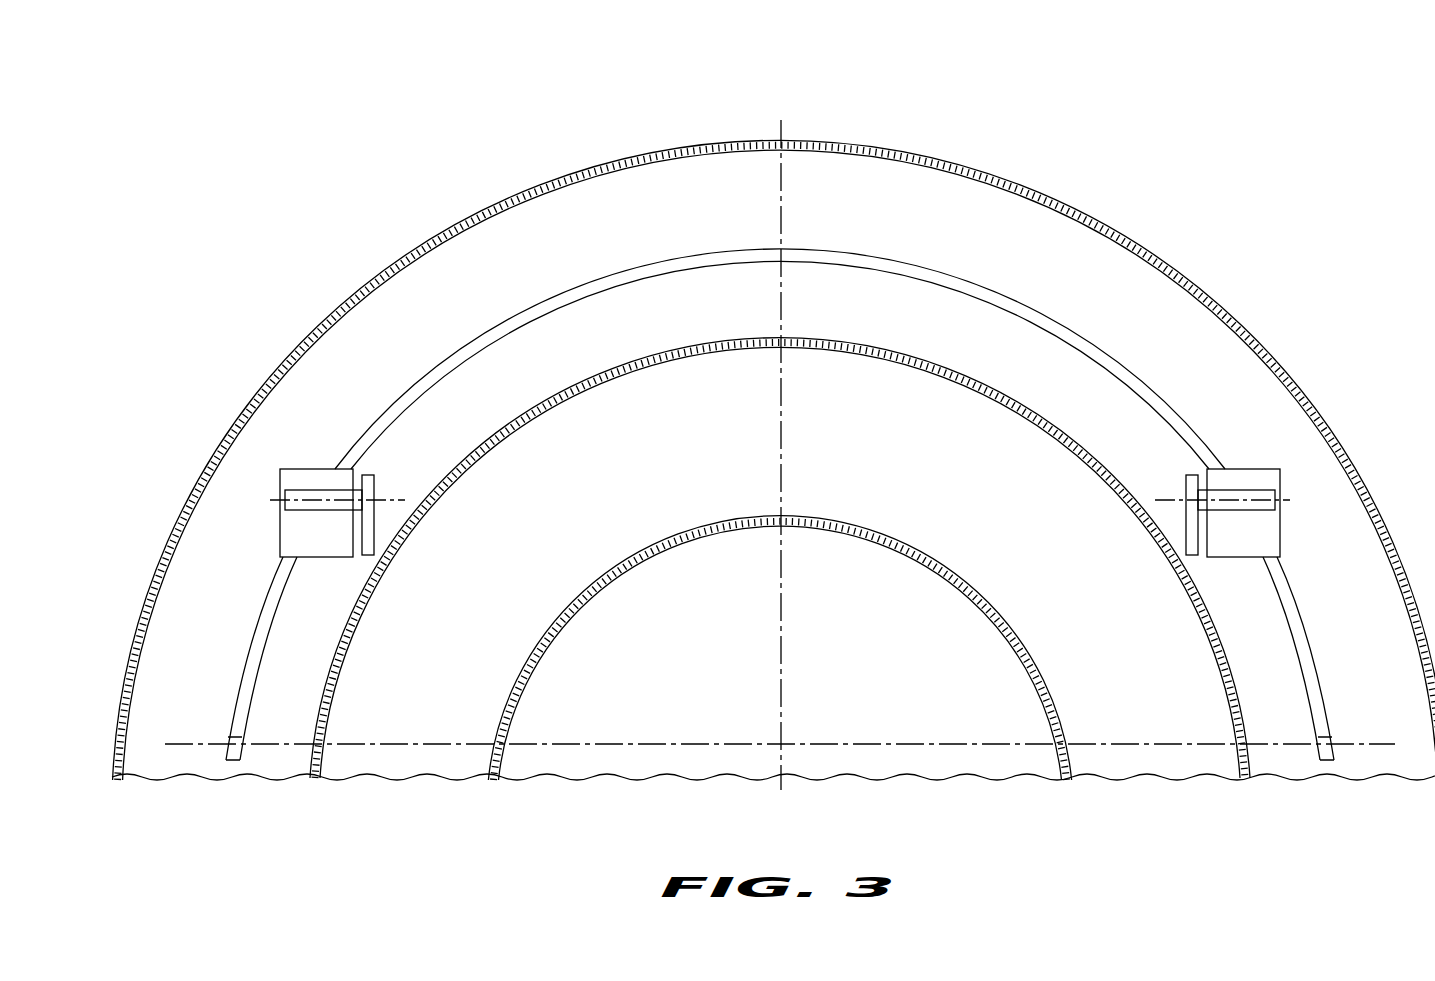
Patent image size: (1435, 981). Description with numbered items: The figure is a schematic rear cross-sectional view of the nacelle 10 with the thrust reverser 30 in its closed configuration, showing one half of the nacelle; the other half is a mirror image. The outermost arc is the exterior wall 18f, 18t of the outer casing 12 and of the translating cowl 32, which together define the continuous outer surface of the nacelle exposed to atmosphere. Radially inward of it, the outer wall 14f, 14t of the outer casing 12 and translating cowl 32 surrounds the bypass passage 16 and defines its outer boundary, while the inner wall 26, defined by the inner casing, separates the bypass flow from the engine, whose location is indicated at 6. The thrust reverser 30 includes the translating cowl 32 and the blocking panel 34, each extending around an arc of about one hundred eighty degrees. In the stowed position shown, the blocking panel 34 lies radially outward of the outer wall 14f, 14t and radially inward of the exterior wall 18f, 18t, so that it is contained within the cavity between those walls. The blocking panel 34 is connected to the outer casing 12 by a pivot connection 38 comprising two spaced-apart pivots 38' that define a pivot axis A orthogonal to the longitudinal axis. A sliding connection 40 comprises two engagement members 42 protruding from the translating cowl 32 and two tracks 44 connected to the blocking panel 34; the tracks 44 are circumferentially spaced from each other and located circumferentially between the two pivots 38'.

The nacelle 10 is at (284, 196).
The outer casing 12 is at (774, 415).
The translating cowl 32 is at (988, 160).
The thrust reverser 30 is at (714, 296).
The blocking panel 34 is at (520, 296).
The outer wall 14f is at (762, 597).
The outer wall 14t is at (312, 785).
The bypass passage 16 is at (779, 654).
The inner wall 26 is at (550, 643).
The engine 6 is at (751, 723).
The pivot axis A is at (538, 745).
The sliding connection 40 is at (772, 427).
The engagement member 42 is at (290, 493).
The track 44 is at (308, 537).
The pivot connection 38 is at (785, 699).
The pivot 38' is at (785, 699).
The exterior wall 18f is at (769, 815).
The exterior wall 18t is at (117, 785).